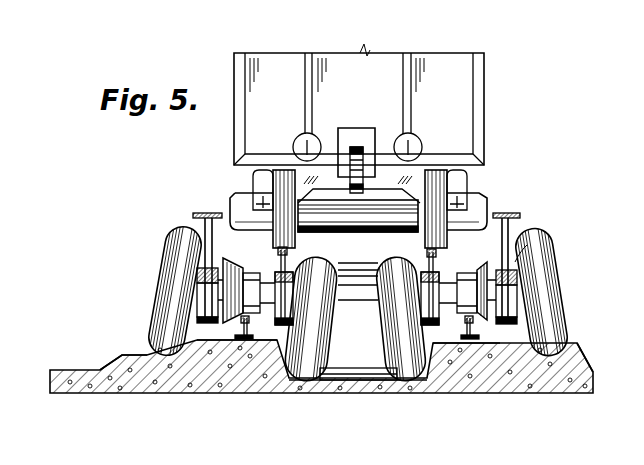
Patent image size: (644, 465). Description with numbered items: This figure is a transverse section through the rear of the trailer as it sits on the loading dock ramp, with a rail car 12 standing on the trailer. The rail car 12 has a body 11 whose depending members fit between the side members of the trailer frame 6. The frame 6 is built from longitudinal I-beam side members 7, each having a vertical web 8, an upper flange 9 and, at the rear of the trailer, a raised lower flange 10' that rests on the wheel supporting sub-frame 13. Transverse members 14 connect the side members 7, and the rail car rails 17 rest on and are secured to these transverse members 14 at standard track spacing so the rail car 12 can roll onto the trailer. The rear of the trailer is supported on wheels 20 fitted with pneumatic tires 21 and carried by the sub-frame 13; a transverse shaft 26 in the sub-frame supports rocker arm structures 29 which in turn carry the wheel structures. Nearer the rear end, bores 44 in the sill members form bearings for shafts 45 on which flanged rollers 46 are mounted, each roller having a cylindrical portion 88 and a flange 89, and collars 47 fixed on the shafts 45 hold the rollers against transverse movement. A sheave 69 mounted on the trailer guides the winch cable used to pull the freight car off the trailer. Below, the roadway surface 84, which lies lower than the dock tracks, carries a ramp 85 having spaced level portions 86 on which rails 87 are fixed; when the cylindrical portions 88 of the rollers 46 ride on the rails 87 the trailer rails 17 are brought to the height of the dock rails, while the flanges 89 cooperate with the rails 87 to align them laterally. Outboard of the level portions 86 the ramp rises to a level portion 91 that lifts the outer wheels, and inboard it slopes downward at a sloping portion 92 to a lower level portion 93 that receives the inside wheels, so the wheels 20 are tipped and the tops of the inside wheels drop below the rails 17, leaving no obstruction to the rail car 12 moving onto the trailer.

The rail car 12 is at (485, 110).
The body 11 is at (470, 195).
The sheave 69 is at (366, 249).
The frame 6 is at (200, 213).
The web 8 is at (217, 228).
The upper flange 9 is at (510, 213).
The I-beam side member 7 is at (514, 232).
The bore 44 is at (197, 296).
The sub-frame 13 is at (520, 289).
The flange 89 is at (217, 330).
The collar 47 is at (518, 313).
The transverse member 14 is at (271, 273).
The rail car rail 17 is at (430, 266).
The shaft 45 is at (440, 278).
The cylindrical portion 88 is at (466, 280).
The flanged roller 46 is at (249, 327).
The rocker arm structure 29 is at (441, 314).
The shaft 26 is at (355, 305).
The pneumatic tire 21 is at (162, 298).
The wheel 20 is at (577, 343).
The lower flange 10' is at (533, 264).
The sloping portion 92 is at (338, 374).
The ground 84 is at (65, 370).
The ramp 85 is at (133, 355).
The level portion 86 is at (267, 337).
The rail 87 is at (463, 328).
The level portion 91 is at (580, 351).
The level portion 93 is at (358, 383).